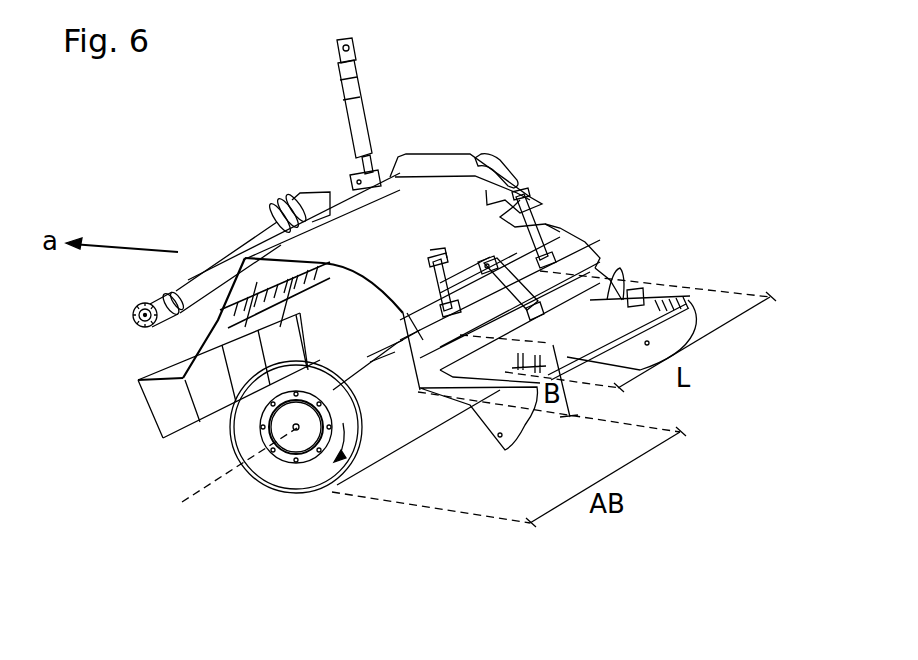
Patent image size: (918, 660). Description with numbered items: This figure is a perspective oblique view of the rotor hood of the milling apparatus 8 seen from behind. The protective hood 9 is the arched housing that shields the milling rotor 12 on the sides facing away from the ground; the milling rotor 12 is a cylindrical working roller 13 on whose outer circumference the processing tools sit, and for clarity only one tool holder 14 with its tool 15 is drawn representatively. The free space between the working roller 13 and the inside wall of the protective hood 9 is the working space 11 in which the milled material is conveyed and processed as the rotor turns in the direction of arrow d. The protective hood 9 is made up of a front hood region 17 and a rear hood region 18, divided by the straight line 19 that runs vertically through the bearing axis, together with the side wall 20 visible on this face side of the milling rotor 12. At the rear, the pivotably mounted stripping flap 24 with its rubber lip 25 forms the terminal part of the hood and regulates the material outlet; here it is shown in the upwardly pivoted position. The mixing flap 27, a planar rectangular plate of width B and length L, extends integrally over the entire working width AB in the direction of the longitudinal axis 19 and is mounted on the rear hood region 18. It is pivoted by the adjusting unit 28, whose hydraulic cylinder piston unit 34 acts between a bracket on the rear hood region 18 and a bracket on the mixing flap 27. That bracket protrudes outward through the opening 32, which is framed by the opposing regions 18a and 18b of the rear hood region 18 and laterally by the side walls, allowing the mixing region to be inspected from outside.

The milling apparatus 8 is at (538, 150).
The protective hood 9 is at (376, 232).
The working space 11 is at (308, 320).
The milling rotor 12 is at (298, 448).
The working roller 13 is at (330, 480).
The tool holder 14 is at (305, 396).
The tool 15 is at (349, 442).
The front hood region 17 is at (222, 308).
The rear hood region 18 is at (488, 200).
The region of the rear hood region 18a is at (560, 223).
The region of the rear hood region 18b is at (578, 295).
The straight line 19 is at (199, 490).
The side wall 20 is at (476, 167).
The stripping flap 24 is at (605, 322).
The rubber lip 25 is at (585, 357).
The mixing flap 27 is at (437, 373).
The adjusting unit 28 is at (532, 262).
The opening 32 is at (553, 282).
The hydraulic cylinder piston unit 34 is at (440, 262).